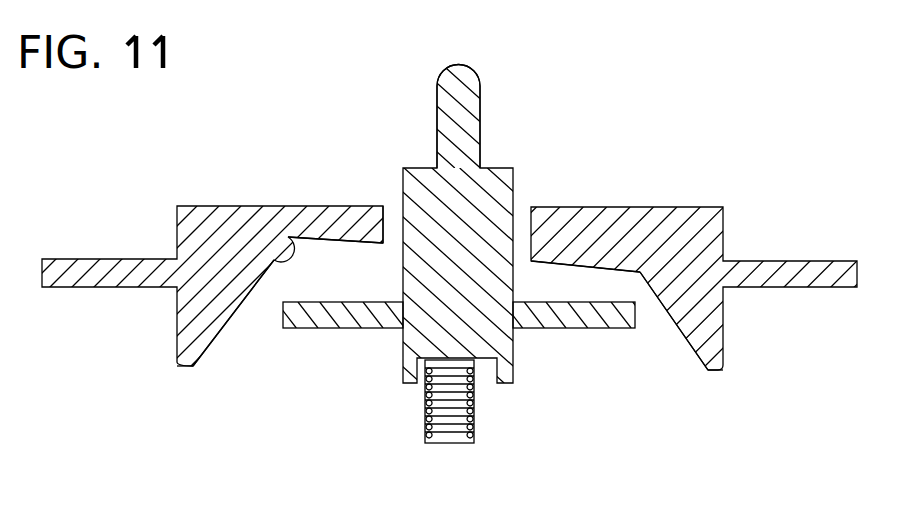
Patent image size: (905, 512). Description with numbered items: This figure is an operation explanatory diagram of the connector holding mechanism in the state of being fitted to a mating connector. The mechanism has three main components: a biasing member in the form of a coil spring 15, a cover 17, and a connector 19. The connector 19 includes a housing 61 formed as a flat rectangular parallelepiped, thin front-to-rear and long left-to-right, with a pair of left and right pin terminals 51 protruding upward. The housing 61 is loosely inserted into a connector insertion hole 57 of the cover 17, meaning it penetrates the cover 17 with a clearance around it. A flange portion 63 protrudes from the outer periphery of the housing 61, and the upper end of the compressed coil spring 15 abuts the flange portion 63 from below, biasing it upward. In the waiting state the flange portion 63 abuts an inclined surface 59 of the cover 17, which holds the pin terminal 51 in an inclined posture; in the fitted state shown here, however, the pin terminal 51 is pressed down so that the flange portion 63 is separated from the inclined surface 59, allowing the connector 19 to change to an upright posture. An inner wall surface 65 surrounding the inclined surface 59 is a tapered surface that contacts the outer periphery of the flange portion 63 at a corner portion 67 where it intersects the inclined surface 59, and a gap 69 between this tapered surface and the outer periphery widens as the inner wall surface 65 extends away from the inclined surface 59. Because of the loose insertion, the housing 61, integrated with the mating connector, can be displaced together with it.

The coil spring 15 is at (471, 415).
The cover 17 is at (722, 207).
The connector 19 is at (481, 204).
The pin terminal 51 is at (472, 68).
The connector insertion hole 57 is at (384, 228).
The inclined surface 59 is at (342, 243).
The housing 61 is at (512, 183).
The flange portion 63 is at (305, 326).
The inner wall surface 65 is at (207, 343).
The corner portion 67 is at (276, 258).
The gap 69 is at (255, 307).